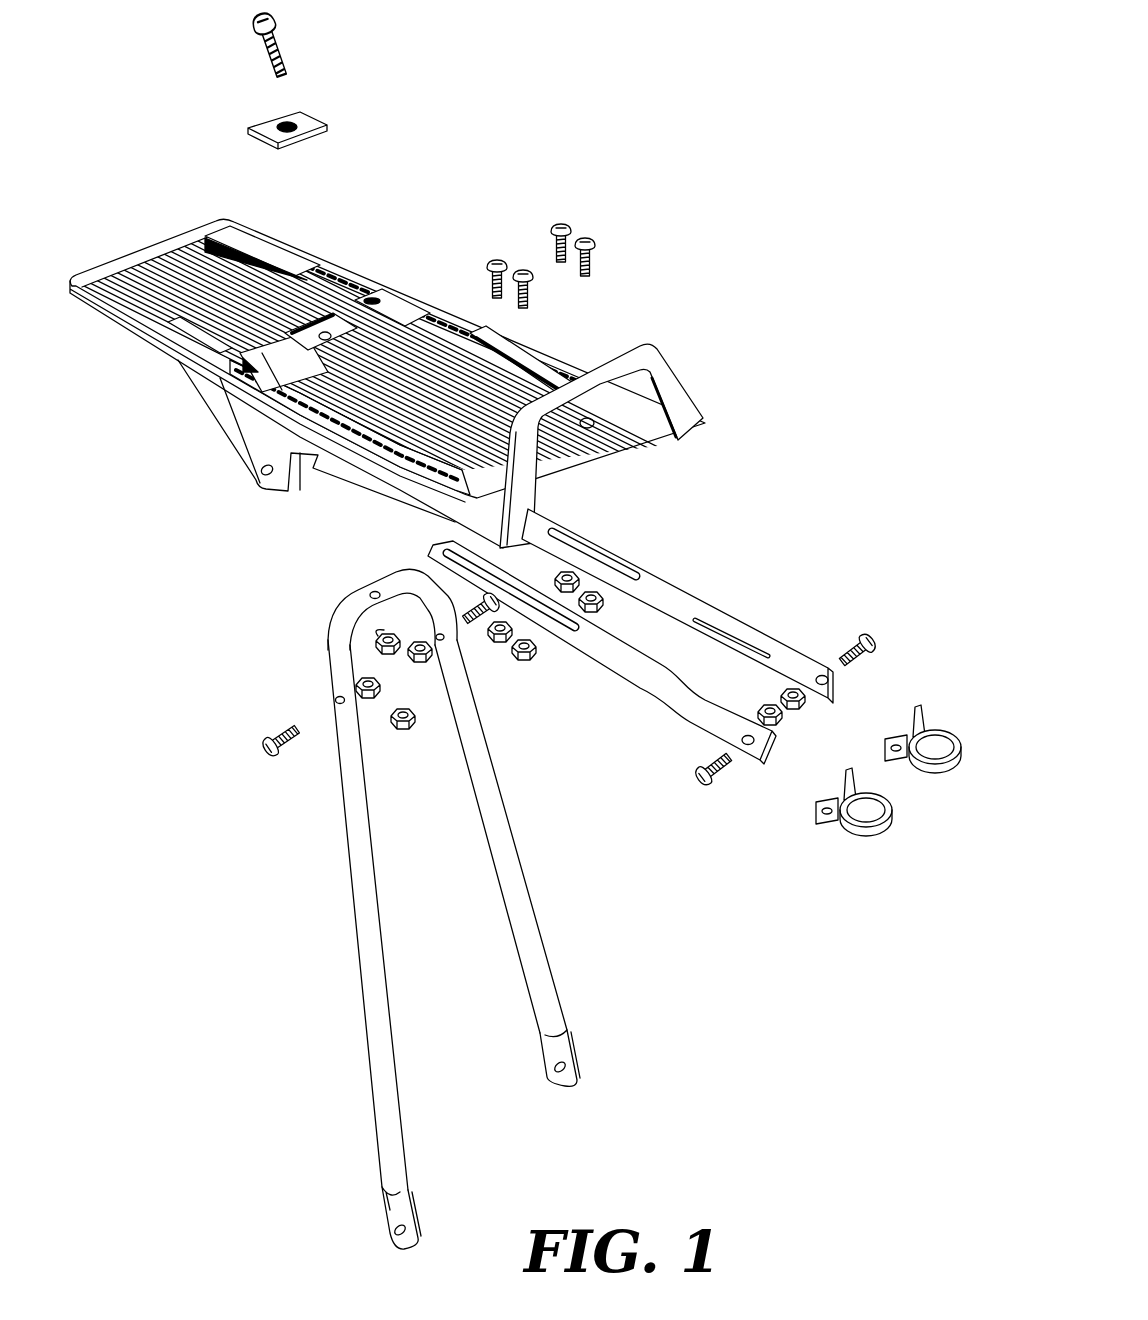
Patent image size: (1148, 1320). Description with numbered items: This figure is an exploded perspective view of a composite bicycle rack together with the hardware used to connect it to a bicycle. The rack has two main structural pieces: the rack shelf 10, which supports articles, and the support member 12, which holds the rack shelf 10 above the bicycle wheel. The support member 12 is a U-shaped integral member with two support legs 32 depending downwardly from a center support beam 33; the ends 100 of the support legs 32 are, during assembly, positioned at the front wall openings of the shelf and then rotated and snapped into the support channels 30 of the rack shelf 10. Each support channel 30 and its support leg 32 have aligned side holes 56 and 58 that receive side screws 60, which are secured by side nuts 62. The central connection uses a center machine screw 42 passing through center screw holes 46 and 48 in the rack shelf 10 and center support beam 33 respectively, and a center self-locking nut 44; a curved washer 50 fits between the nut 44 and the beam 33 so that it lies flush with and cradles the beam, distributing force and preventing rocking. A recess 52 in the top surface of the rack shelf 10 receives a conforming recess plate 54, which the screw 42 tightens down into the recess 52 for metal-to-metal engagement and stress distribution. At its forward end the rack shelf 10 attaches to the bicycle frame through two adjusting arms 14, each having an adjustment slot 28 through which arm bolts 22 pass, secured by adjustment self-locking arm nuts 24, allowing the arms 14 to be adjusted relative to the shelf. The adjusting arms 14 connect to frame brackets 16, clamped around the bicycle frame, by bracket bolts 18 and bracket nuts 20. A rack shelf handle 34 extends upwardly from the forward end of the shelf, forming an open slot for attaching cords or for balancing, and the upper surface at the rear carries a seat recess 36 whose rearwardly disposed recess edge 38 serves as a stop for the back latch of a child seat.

The rack shelf 10 is at (387, 379).
The support member 12 is at (428, 888).
The adjusting arms 14 is at (630, 636).
The frame brackets 16 is at (935, 728).
The bracket bolts 18 is at (850, 640).
The bracket nuts 20 is at (790, 712).
The arm bolts 22 is at (587, 242).
The adjustment self-locking arm nuts 24 is at (590, 592).
The adjustment slot 28 is at (626, 596).
The support channel 30 is at (315, 459).
The support legs 32 is at (525, 858).
The center support beam 33 is at (352, 612).
The rack shelf handle 34 is at (590, 373).
The seat recess 36 is at (387, 379).
The recess edge 38 is at (150, 268).
The center machine screw 42 is at (280, 52).
The center self-locking nut 44 is at (403, 730).
The center screw hole 46 is at (326, 333).
The center screw hole 48 is at (375, 596).
The curved washer 50 is at (375, 648).
The recess 52 is at (323, 328).
The recess plate 54 is at (300, 120).
The side holes 56 is at (262, 472).
The side holes 58 is at (335, 702).
The side screws 60 is at (266, 741).
The side nuts 62 is at (380, 688).
The ends 100 is at (390, 1212).